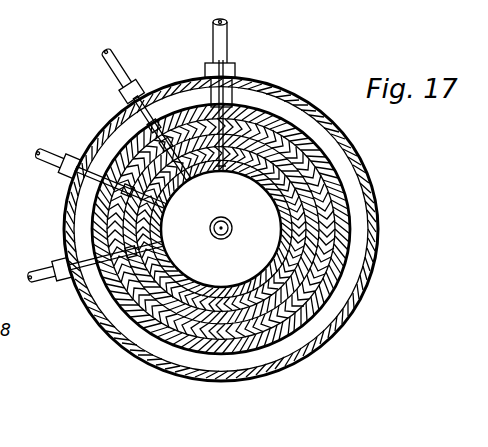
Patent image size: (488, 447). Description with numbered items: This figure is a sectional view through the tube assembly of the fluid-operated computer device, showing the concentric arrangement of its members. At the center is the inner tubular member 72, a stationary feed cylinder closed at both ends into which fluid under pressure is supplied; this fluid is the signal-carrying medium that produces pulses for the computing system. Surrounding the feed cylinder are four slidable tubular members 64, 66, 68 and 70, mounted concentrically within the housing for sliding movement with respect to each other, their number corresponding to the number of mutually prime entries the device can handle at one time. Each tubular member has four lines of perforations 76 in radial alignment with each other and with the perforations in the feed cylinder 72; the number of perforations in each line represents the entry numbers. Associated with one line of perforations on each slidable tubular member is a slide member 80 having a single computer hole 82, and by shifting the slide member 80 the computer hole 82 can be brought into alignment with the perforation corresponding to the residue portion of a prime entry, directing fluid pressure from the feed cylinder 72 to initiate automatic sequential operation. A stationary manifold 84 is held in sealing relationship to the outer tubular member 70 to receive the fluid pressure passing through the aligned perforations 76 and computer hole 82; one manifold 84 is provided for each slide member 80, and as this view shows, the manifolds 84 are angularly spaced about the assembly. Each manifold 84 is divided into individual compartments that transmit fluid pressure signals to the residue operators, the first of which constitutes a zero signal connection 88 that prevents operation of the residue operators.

The slidable tubular member 64 is at (300, 230).
The slidable tubular member 66 is at (337, 187).
The slidable tubular member 68 is at (286, 135).
The outer tubular member 70 is at (262, 115).
The inner tubular member 72 is at (177, 280).
The perforations 76 is at (186, 183).
The slide member 80 is at (239, 90).
The computer hole 82 is at (208, 92).
The stationary manifold 84 is at (126, 115).
The zero signal connection 88 is at (221, 172).